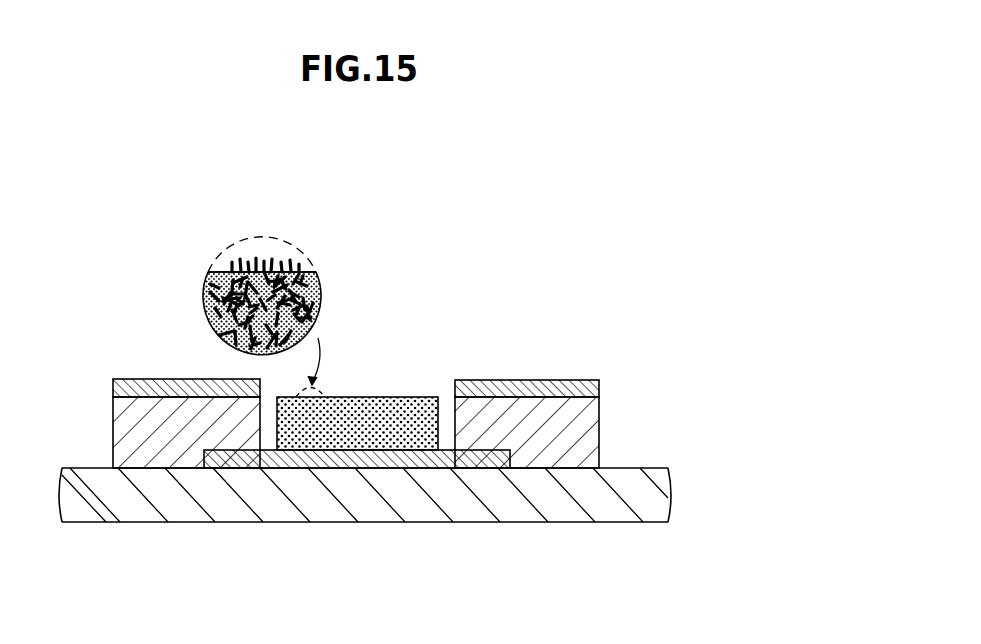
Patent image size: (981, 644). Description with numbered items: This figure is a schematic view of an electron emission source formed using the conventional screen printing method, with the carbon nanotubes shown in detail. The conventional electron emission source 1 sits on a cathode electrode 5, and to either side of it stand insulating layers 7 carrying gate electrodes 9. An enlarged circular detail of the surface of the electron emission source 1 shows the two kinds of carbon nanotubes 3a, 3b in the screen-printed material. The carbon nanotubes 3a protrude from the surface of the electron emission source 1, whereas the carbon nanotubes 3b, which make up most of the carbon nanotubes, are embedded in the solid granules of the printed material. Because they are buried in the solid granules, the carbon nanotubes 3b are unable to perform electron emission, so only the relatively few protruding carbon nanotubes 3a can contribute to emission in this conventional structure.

The electron emission source 1 is at (395, 410).
The carbon nanotubes 3a is at (282, 266).
The carbon nanotubes 3b is at (208, 302).
The cathode electrode 5 is at (337, 462).
The insulating layers 7 is at (115, 419).
The gate electrodes 9 is at (533, 392).